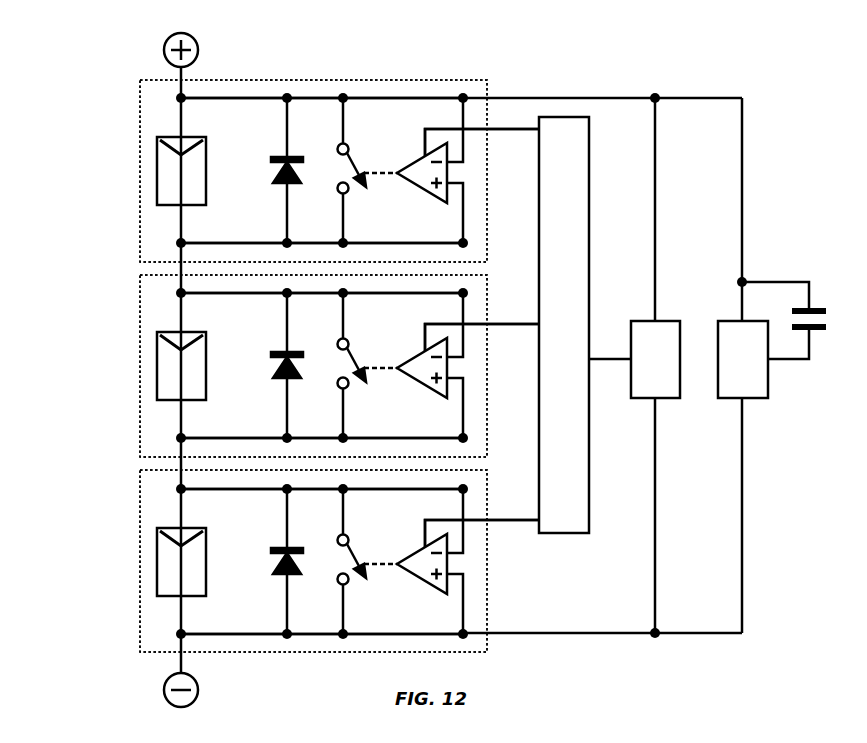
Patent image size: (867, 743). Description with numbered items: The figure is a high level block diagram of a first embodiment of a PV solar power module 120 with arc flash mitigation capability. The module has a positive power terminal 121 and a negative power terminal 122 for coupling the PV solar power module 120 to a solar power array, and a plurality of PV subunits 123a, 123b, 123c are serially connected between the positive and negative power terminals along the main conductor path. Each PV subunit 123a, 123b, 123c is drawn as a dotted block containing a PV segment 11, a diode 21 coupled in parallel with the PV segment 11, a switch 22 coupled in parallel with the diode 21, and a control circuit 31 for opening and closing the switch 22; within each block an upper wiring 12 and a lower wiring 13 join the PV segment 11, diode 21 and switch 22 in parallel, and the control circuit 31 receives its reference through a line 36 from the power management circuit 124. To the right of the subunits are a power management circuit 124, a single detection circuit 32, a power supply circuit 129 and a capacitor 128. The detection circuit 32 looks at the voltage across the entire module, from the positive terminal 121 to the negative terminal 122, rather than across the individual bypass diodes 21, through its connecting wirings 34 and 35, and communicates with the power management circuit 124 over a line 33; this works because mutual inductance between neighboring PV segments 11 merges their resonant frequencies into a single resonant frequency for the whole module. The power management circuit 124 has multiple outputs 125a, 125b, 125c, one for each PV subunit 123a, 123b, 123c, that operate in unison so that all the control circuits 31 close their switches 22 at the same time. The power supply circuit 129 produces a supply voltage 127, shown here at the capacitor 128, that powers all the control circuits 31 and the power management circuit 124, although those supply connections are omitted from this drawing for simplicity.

The PV solar power module 120 is at (95, 84).
The positive power terminal 121 is at (164, 46).
The negative power terminal 122 is at (164, 688).
The PV subunit 123a is at (140, 171).
The PV subunit 123b is at (140, 366).
The PV subunit 123c is at (140, 562).
The PV segment 11 is at (207, 165).
The first wiring 12 is at (245, 100).
The second wiring 13 is at (240, 241).
The diode 21 is at (300, 156).
The switch 22 is at (349, 149).
The control circuit 31 is at (420, 190).
The reference signal line 36 is at (423, 151).
The output 125a is at (534, 131).
The output 125b is at (534, 326).
The output 125c is at (534, 522).
The power management circuit 124 is at (561, 535).
The detection signal line 33 is at (607, 357).
The detector input wiring 34 is at (657, 319).
The detection circuit 32 is at (680, 400).
The detector output wiring 35 is at (652, 401).
The supply voltage 127 is at (793, 362).
The capacitor 128 is at (815, 306).
The power supply circuit 129 is at (760, 400).